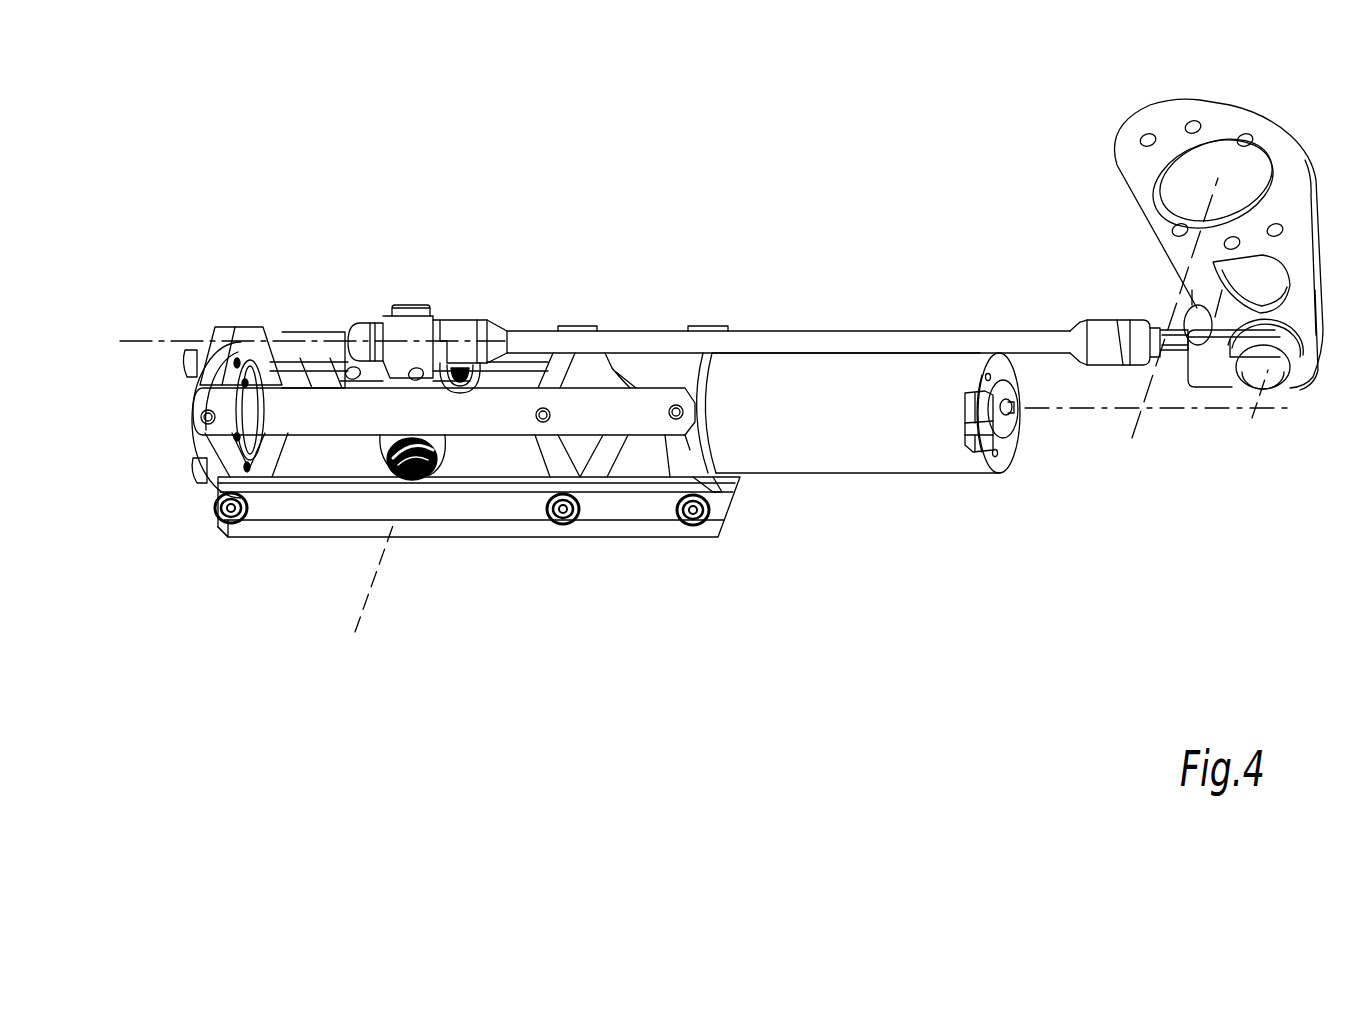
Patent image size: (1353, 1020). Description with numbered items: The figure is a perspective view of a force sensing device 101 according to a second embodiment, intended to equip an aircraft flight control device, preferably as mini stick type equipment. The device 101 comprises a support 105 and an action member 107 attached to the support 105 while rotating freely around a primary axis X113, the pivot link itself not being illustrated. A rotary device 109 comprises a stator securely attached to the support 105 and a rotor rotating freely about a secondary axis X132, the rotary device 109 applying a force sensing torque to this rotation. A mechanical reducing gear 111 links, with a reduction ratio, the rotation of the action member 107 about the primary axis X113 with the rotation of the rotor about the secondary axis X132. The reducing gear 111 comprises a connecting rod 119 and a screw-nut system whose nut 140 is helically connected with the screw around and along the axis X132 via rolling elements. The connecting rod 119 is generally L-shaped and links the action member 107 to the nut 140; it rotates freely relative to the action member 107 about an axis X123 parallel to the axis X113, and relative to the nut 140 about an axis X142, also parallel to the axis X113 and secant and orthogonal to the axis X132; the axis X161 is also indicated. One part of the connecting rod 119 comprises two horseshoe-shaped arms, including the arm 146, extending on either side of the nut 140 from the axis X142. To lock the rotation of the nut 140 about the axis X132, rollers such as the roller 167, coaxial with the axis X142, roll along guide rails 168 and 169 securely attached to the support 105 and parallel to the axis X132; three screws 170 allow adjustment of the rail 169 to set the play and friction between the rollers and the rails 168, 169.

The force sensing device 101 is at (737, 242).
The support 105 is at (478, 538).
The action member 107 is at (1133, 192).
The rotary device 109 is at (892, 438).
The mechanical reducing gear 111 is at (432, 287).
The connecting rod 119 is at (797, 342).
The nut 140 is at (370, 378).
The arm 146 is at (440, 358).
The roller 167 is at (410, 478).
The guide rail 168 is at (308, 363).
The guide rail 169 is at (317, 482).
The screws 170 is at (222, 524).
The pivot axis X161 is at (287, 340).
The secondary axis X132 is at (1180, 404).
The primary axis X113 is at (1156, 321).
The axis of pivot link 123 X123 is at (1258, 417).
The axis of pivot link 142 X142 is at (370, 589).